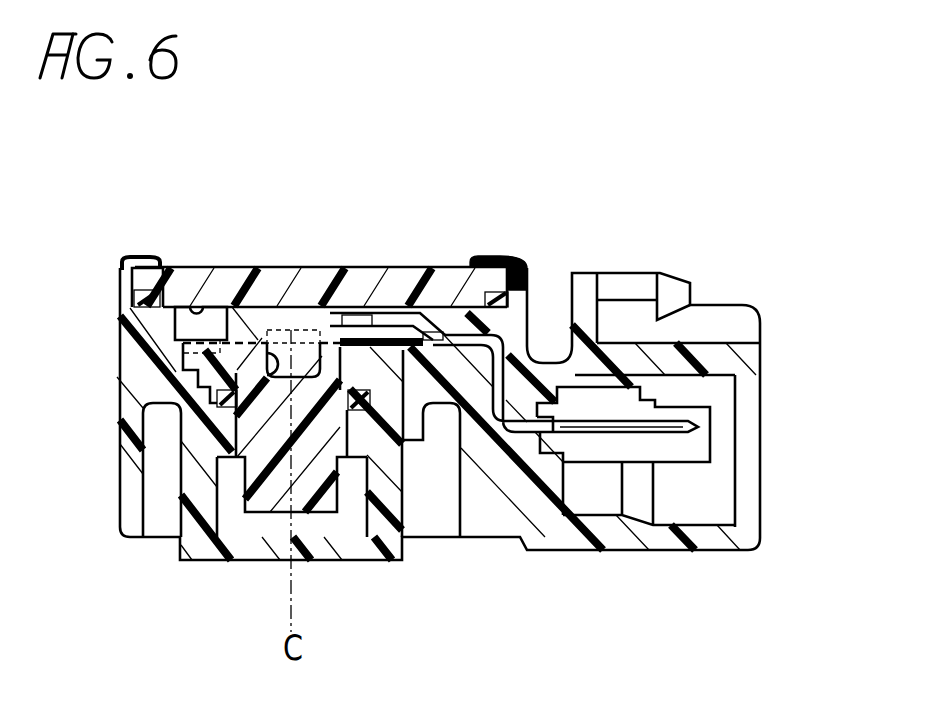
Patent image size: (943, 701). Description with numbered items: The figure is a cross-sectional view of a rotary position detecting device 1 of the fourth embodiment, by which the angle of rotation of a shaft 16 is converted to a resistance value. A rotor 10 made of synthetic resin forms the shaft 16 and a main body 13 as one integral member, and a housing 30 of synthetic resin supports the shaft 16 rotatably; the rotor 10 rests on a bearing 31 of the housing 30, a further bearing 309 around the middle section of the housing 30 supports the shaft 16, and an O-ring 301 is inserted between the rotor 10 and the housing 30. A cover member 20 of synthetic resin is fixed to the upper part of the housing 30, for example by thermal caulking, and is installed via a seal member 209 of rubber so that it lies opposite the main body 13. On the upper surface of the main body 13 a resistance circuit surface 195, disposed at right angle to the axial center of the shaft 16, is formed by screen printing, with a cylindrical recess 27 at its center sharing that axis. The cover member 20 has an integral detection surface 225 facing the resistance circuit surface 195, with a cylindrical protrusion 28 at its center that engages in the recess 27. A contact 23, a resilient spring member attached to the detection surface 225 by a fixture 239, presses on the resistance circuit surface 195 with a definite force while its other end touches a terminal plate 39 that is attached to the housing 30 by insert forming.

The connector 1 is at (462, 110).
The rotor 10 is at (236, 436).
The main body 13 is at (180, 345).
The shaft 16 is at (318, 500).
The cover member 20 is at (459, 262).
The contact 23 is at (310, 330).
The cylindrical recess 27 is at (220, 398).
The protrusion 28 is at (272, 328).
The housing 30 is at (572, 552).
The bearing 31 is at (236, 400).
The terminal plate 39 is at (645, 433).
The resistance circuit surface 195 is at (231, 312).
The seal member 209 is at (540, 284).
The detection surface 225 is at (205, 308).
The fixture 239 is at (362, 313).
The O-ring 301 is at (128, 433).
The bearing 309 is at (372, 430).